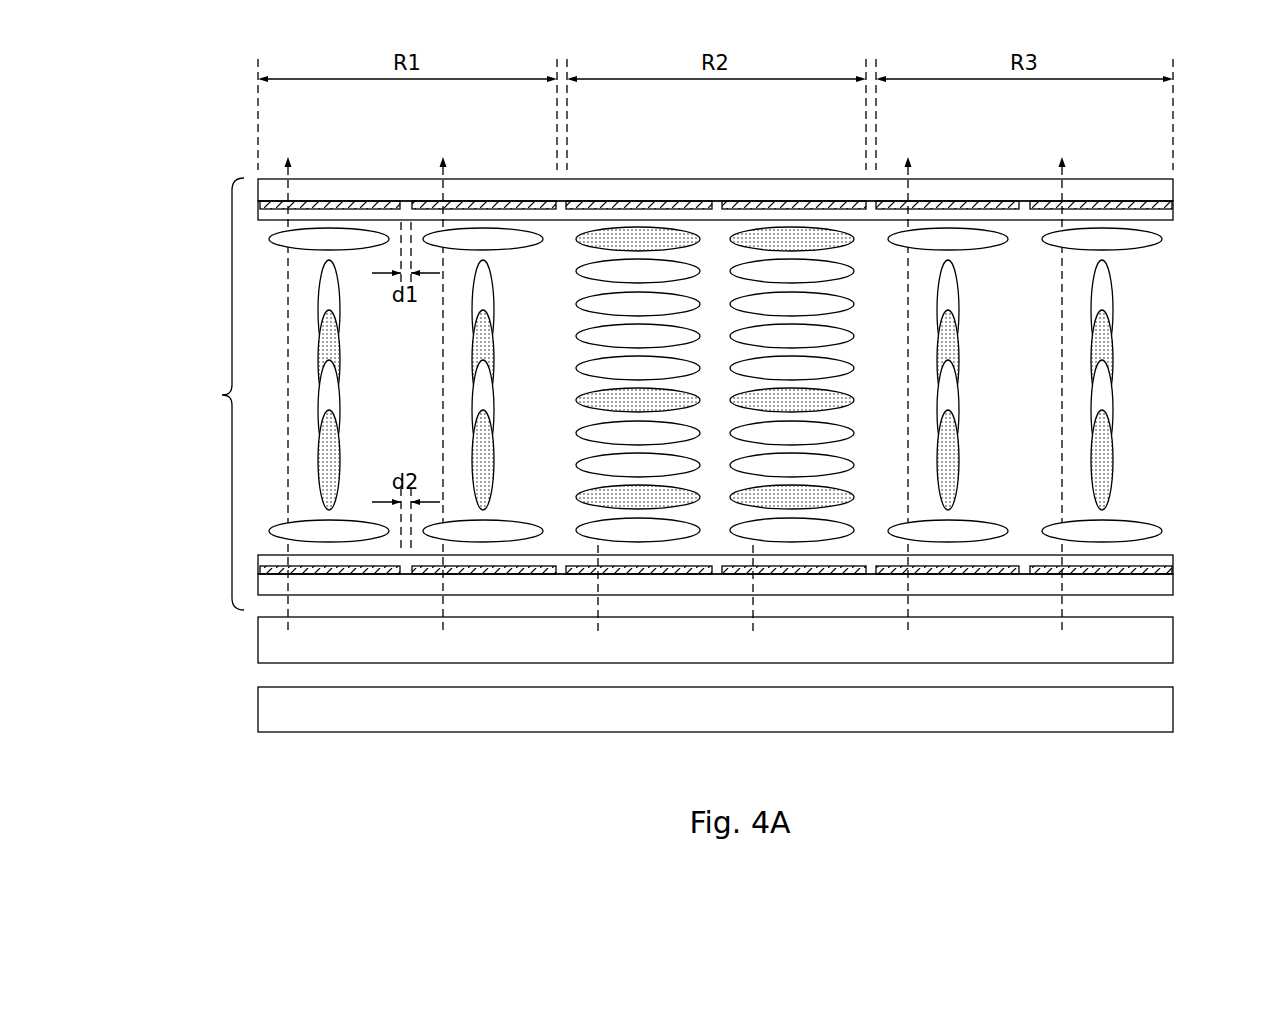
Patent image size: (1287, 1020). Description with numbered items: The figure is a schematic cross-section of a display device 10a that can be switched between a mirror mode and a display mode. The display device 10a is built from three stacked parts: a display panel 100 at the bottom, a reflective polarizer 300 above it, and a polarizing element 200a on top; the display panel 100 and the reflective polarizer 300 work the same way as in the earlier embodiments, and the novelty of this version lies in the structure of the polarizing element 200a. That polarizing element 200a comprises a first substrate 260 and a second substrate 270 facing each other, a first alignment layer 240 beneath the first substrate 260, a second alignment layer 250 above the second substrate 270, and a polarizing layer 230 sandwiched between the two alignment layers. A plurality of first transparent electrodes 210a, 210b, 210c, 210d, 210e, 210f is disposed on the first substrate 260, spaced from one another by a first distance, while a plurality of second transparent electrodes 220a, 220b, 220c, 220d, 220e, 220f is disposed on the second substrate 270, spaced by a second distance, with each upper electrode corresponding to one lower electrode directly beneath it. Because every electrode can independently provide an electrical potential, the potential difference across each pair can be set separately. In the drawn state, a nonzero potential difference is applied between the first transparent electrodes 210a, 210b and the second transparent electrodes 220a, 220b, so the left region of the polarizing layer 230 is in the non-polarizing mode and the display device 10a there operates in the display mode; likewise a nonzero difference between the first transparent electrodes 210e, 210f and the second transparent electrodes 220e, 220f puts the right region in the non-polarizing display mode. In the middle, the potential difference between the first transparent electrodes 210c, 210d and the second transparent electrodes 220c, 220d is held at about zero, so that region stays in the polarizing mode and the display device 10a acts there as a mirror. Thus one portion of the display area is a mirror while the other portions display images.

The display device 10a is at (177, 75).
The polarizing element 200a is at (202, 394).
The first transparent electrode 210a is at (328, 205).
The first transparent electrode 210b is at (482, 205).
The first transparent electrode 210c is at (635, 205).
The first transparent electrode 210d is at (791, 205).
The first transparent electrode 210e is at (945, 205).
The first transparent electrode 210f is at (1100, 205).
The second transparent electrode 220a is at (335, 570).
The second transparent electrode 220b is at (489, 570).
The second transparent electrode 220c is at (645, 570).
The second transparent electrode 220d is at (799, 570).
The second transparent electrode 220e is at (954, 570).
The second transparent electrode 220f is at (1106, 570).
The polarizing layer 230 is at (1150, 407).
The first alignment layer 240 is at (1173, 213).
The second alignment layer 250 is at (1173, 559).
The first substrate 260 is at (1173, 184).
The second substrate 270 is at (1173, 583).
The reflective polarizer 300 is at (1173, 638).
The display panel 100 is at (1173, 710).